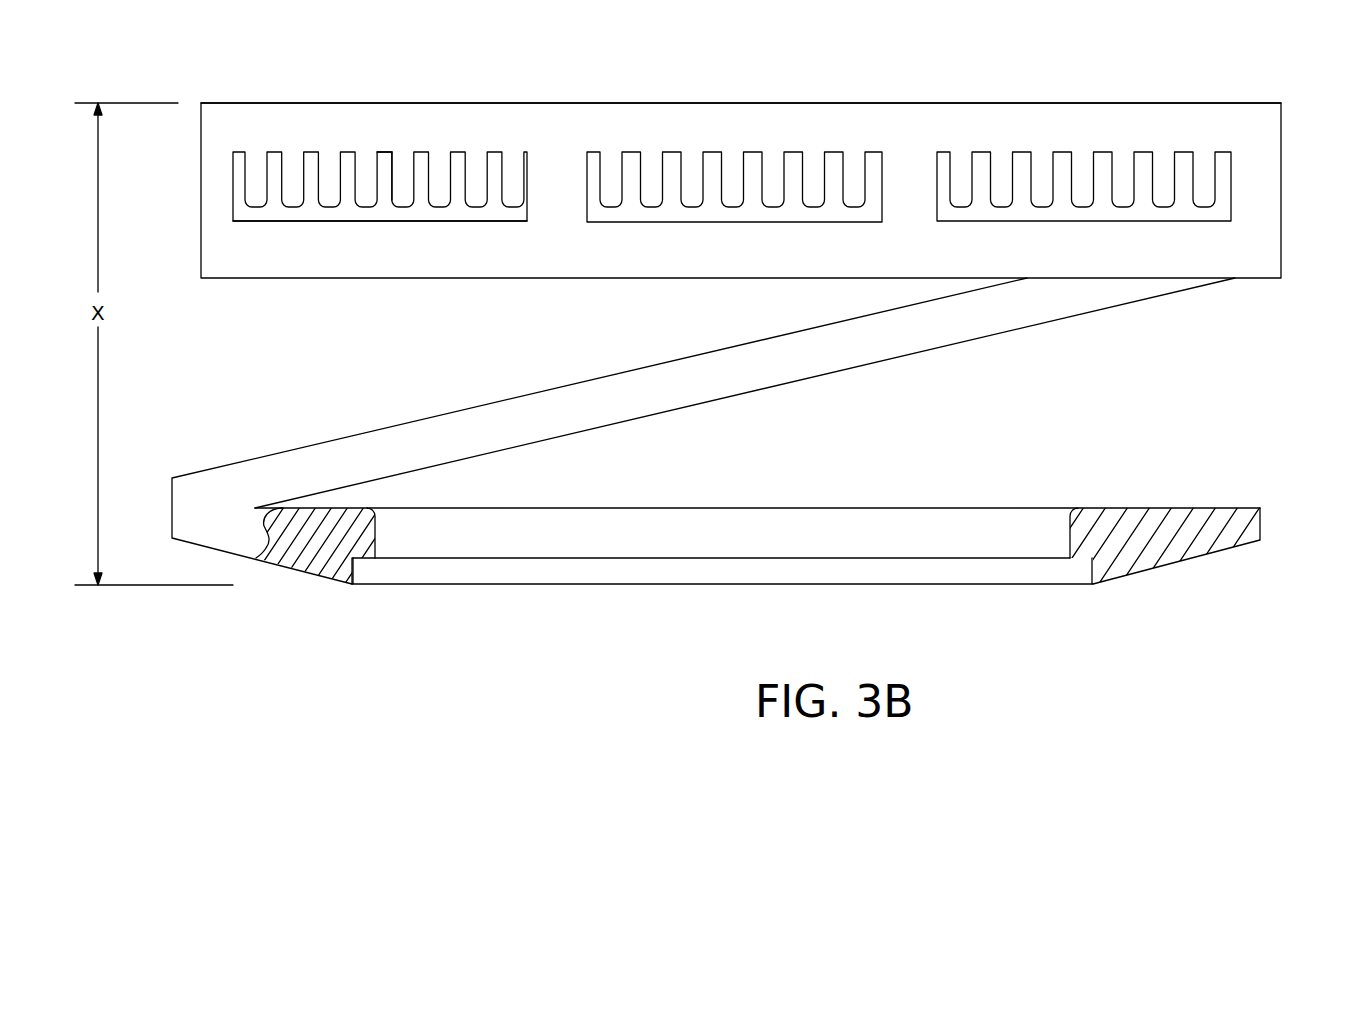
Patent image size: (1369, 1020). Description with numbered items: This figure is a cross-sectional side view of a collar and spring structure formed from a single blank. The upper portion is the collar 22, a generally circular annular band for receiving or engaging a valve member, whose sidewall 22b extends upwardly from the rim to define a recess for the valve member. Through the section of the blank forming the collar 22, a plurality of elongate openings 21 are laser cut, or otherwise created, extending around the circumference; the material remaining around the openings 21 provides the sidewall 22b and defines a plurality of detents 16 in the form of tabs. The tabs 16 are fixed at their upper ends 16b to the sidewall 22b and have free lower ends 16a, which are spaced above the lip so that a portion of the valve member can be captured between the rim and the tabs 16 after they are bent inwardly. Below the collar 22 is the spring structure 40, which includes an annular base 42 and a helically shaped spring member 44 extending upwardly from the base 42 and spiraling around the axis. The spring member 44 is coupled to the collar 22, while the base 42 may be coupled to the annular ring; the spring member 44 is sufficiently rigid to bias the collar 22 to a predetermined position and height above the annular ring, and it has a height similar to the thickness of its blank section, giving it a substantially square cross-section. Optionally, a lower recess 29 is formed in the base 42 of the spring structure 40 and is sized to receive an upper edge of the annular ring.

The detents 16 is at (376, 196).
The free lower ends 16a is at (376, 196).
The upper ends 16b is at (380, 158).
The elongate openings 21 is at (317, 207).
The collar 22 is at (267, 300).
The sidewall 22b is at (510, 118).
The lower recess 29 is at (363, 563).
The spring structure 40 is at (761, 467).
The annular base 42 is at (1157, 568).
The spring member 44 is at (978, 338).